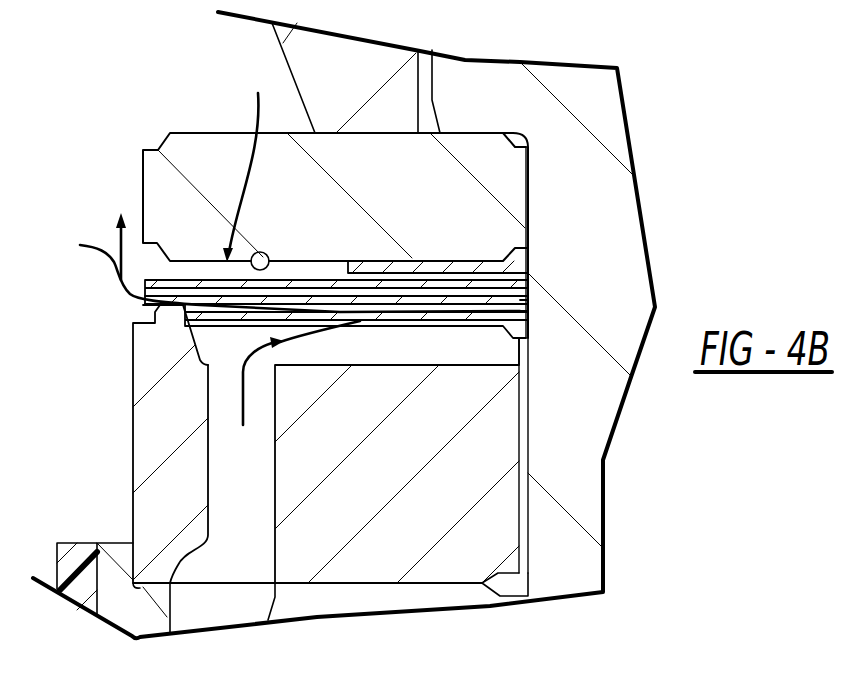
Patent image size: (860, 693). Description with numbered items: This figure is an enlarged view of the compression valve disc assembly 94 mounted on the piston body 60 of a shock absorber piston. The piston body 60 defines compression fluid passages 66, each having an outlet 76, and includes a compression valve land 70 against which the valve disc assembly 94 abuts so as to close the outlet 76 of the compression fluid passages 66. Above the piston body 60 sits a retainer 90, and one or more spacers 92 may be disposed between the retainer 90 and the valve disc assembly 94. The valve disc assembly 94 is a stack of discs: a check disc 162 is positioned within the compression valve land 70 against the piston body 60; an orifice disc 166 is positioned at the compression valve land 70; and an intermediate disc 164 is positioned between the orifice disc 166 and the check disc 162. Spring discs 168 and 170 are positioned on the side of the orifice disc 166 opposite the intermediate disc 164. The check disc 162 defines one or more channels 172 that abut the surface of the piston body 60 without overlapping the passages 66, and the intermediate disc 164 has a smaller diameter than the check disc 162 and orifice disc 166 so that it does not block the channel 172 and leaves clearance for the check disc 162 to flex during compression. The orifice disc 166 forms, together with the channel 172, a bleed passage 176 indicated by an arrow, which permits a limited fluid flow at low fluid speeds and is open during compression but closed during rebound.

The piston body 60 is at (135, 465).
The compression fluid passages 66 is at (237, 493).
The compression valve land 70 is at (158, 318).
The outlet 76 is at (313, 353).
The retainer 90 is at (203, 150).
The spacers 92 is at (428, 270).
The valve disc assembly 94 is at (244, 161).
The check disc 162 is at (520, 320).
The intermediate disc 164 is at (520, 311).
The orifice disc 166 is at (520, 300).
The spring disc 168 is at (325, 293).
The spring disc 170 is at (188, 280).
The channel 172 is at (368, 317).
The bleed passage 176 is at (284, 262).